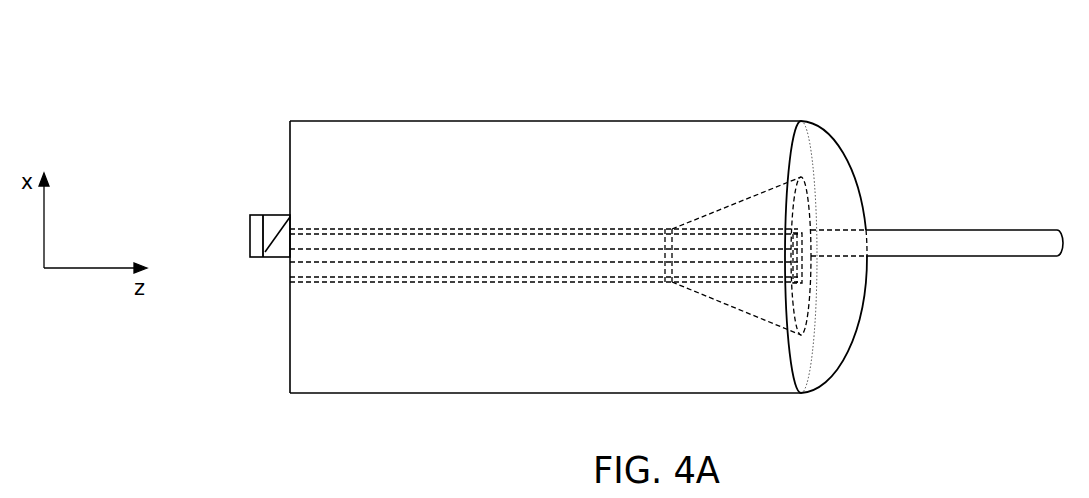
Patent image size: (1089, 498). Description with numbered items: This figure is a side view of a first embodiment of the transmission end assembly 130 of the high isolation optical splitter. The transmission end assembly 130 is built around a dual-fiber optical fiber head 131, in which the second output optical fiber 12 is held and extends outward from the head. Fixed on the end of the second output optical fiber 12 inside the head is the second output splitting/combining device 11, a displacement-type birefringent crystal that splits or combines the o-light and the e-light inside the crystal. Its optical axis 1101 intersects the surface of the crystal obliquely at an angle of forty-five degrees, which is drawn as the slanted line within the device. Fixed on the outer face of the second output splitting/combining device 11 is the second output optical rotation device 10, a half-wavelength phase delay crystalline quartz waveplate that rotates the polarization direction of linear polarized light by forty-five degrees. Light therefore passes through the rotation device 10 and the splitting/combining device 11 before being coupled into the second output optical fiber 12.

The transmission end assembly 130 is at (942, 152).
The dual-fiber optical fiber head 131 is at (520, 121).
The second output optical fiber 12 is at (995, 257).
The second output optical rotation device 10 is at (250, 257).
The second output splitting/combining device 11 is at (280, 213).
The optical axis 1101 is at (278, 235).